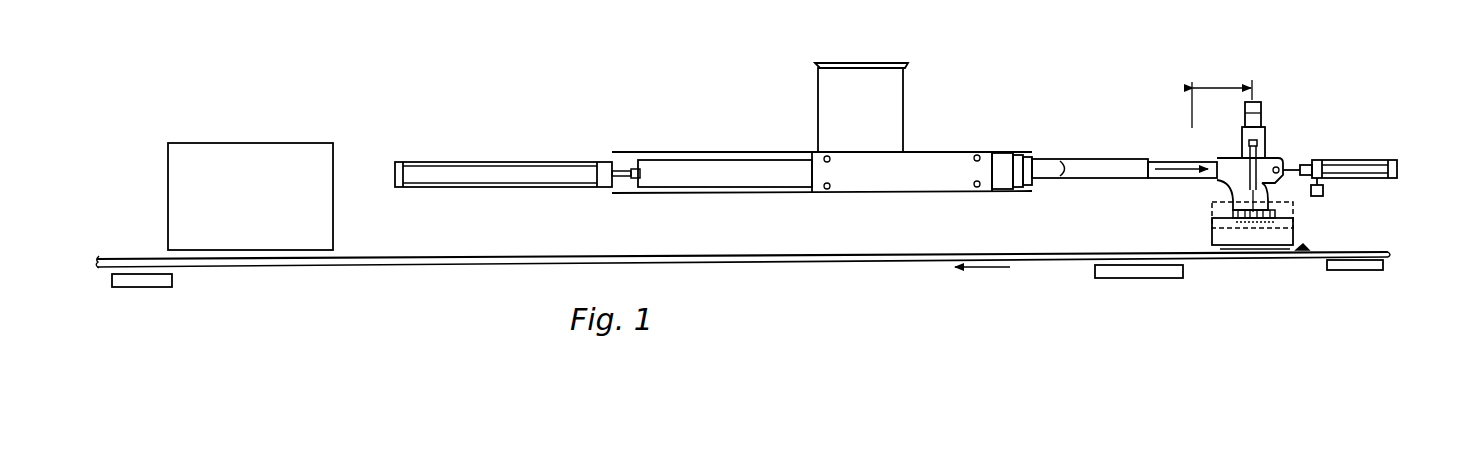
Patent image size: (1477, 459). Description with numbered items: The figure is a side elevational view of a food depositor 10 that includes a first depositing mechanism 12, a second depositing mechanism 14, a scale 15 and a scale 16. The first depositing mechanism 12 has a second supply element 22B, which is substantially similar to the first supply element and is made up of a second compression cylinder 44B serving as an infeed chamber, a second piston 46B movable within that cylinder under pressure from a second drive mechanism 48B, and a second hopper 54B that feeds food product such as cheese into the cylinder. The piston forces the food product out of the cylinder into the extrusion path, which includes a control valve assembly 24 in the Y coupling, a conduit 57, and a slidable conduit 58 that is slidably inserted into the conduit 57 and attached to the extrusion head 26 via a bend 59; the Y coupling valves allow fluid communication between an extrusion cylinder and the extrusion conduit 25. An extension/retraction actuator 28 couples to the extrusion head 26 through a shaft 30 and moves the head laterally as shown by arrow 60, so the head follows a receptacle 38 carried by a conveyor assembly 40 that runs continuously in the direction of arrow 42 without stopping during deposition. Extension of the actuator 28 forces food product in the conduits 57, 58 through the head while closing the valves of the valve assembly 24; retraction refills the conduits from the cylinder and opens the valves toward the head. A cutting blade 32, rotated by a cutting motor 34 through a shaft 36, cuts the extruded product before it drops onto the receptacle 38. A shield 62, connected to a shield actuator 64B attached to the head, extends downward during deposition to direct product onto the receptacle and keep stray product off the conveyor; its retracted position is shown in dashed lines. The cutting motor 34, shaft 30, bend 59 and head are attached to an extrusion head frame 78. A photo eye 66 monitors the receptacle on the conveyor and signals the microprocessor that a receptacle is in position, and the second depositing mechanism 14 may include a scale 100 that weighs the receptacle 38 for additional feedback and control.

The food depositor 10 is at (1375, 32).
The first depositing mechanism 12 is at (968, 54).
The second depositing mechanism 14 is at (270, 216).
The scale 15 is at (1362, 271).
The scale 16 is at (1106, 280).
The second supply element 22B is at (656, 202).
The control valve assembly 24 is at (1022, 146).
The extrusion conduit 25 is at (1125, 146).
The extrusion head 26 is at (1224, 208).
The extension/retraction actuator 28 is at (1346, 157).
The shaft 30 is at (1287, 156).
The cutting blade 32 is at (1243, 228).
The cutting motor 34 is at (1243, 100).
The shaft 36 is at (1252, 228).
The receptacle 38 is at (1305, 248).
The conveyor assembly 40 is at (1395, 246).
The arrow 42 is at (963, 270).
The second compression cylinder 44B is at (915, 186).
The second piston 46B is at (688, 170).
The second drive mechanism 48B is at (493, 128).
The second hopper 54B is at (887, 113).
The conduit 57 is at (1085, 172).
The slidable conduit 58 is at (1163, 159).
The bend 59 is at (1228, 182).
The arrow 60 is at (1185, 155).
The shield 62 is at (1283, 238).
The shield actuator 64B is at (1255, 150).
The photo eye 66 is at (1326, 191).
The extrusion head frame 78 is at (1222, 106).
The scale 100 is at (172, 281).